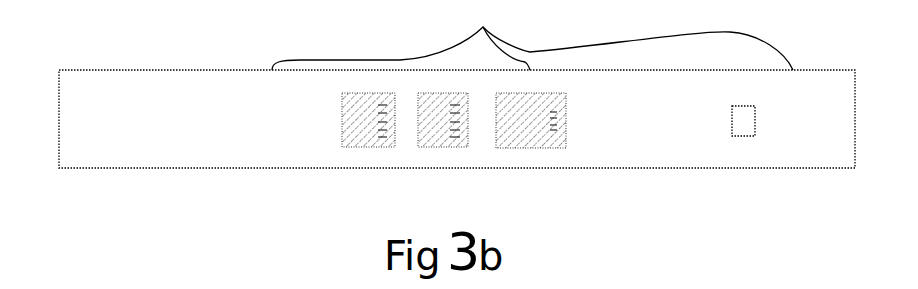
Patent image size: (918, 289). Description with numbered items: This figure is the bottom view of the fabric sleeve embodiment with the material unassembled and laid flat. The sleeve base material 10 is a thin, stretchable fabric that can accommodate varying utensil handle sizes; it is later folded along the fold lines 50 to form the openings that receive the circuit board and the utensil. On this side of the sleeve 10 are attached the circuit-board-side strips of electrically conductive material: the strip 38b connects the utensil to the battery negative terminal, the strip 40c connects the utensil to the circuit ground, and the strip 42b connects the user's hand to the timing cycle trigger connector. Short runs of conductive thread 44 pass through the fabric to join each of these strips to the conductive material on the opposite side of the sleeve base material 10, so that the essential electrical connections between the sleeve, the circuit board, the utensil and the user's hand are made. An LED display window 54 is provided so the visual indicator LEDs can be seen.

The sleeve base material 10 is at (129, 130).
The folds in sleeve base material 50 is at (532, 38).
The conductive material to connect utensil to battery negative terminal, circuit boa 38b is at (357, 128).
The conductive material to connect utensil to circuit ground, circuit board side 40c is at (437, 125).
The conductive material to connect user's hand to timing cycle trigger connector, ci 42b is at (515, 130).
The conductive thread 44 is at (382, 135).
The LED display window 54 is at (739, 125).